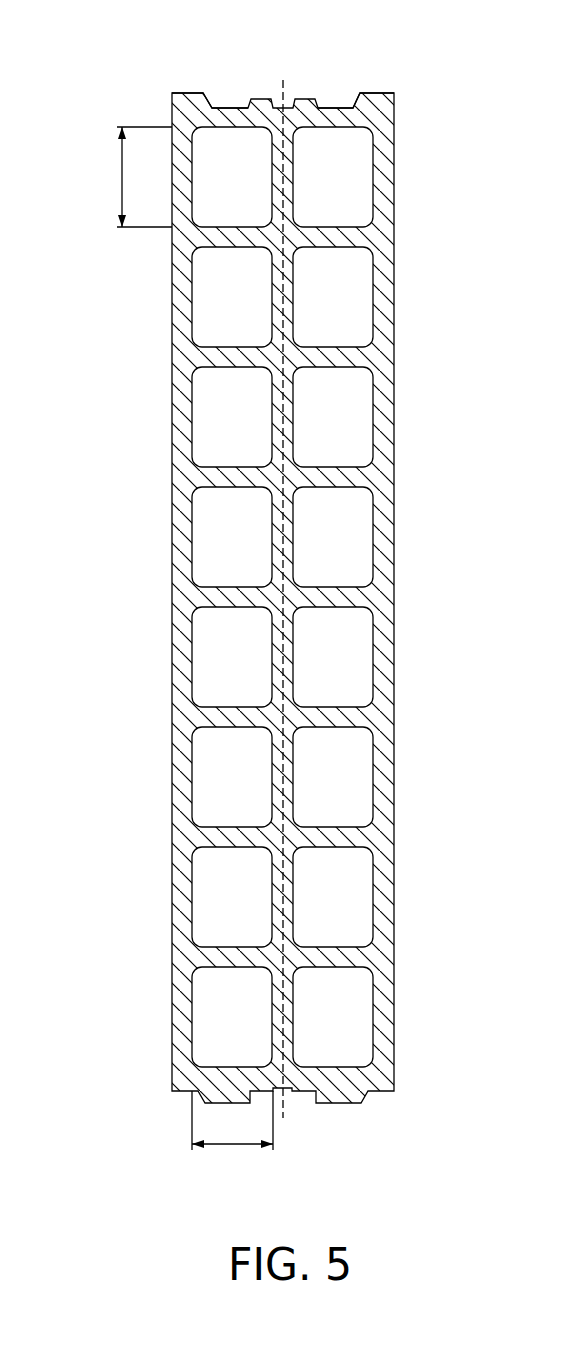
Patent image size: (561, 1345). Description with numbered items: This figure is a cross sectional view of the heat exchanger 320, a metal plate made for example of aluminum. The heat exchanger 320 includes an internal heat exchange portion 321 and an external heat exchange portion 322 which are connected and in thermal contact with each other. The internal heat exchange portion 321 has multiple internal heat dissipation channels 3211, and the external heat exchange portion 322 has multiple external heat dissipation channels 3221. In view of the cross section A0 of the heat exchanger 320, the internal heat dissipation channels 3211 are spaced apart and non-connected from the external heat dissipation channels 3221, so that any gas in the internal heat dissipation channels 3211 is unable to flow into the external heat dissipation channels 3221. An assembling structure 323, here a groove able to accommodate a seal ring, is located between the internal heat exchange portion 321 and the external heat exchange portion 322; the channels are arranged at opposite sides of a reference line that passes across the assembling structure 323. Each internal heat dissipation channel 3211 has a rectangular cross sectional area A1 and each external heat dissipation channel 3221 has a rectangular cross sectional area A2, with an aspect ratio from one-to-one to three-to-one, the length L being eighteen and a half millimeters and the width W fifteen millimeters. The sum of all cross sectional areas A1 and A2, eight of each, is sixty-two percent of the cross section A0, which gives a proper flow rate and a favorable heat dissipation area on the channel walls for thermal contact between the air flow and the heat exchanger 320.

The heat exchanger 320 is at (85, 31).
The internal heat exchange portion 321 is at (187, 1095).
The external heat exchange portion 322 is at (382, 1097).
The assembling structure 323 is at (288, 108).
The internal heat dissipation channel 3211 is at (212, 108).
The external heat dissipation channel 3221 is at (353, 108).
The cross section A0 is at (375, 113).
The cross sectional area A1 is at (235, 162).
The cross sectional area A2 is at (331, 162).
The length L is at (136, 177).
The width W is at (232, 1134).